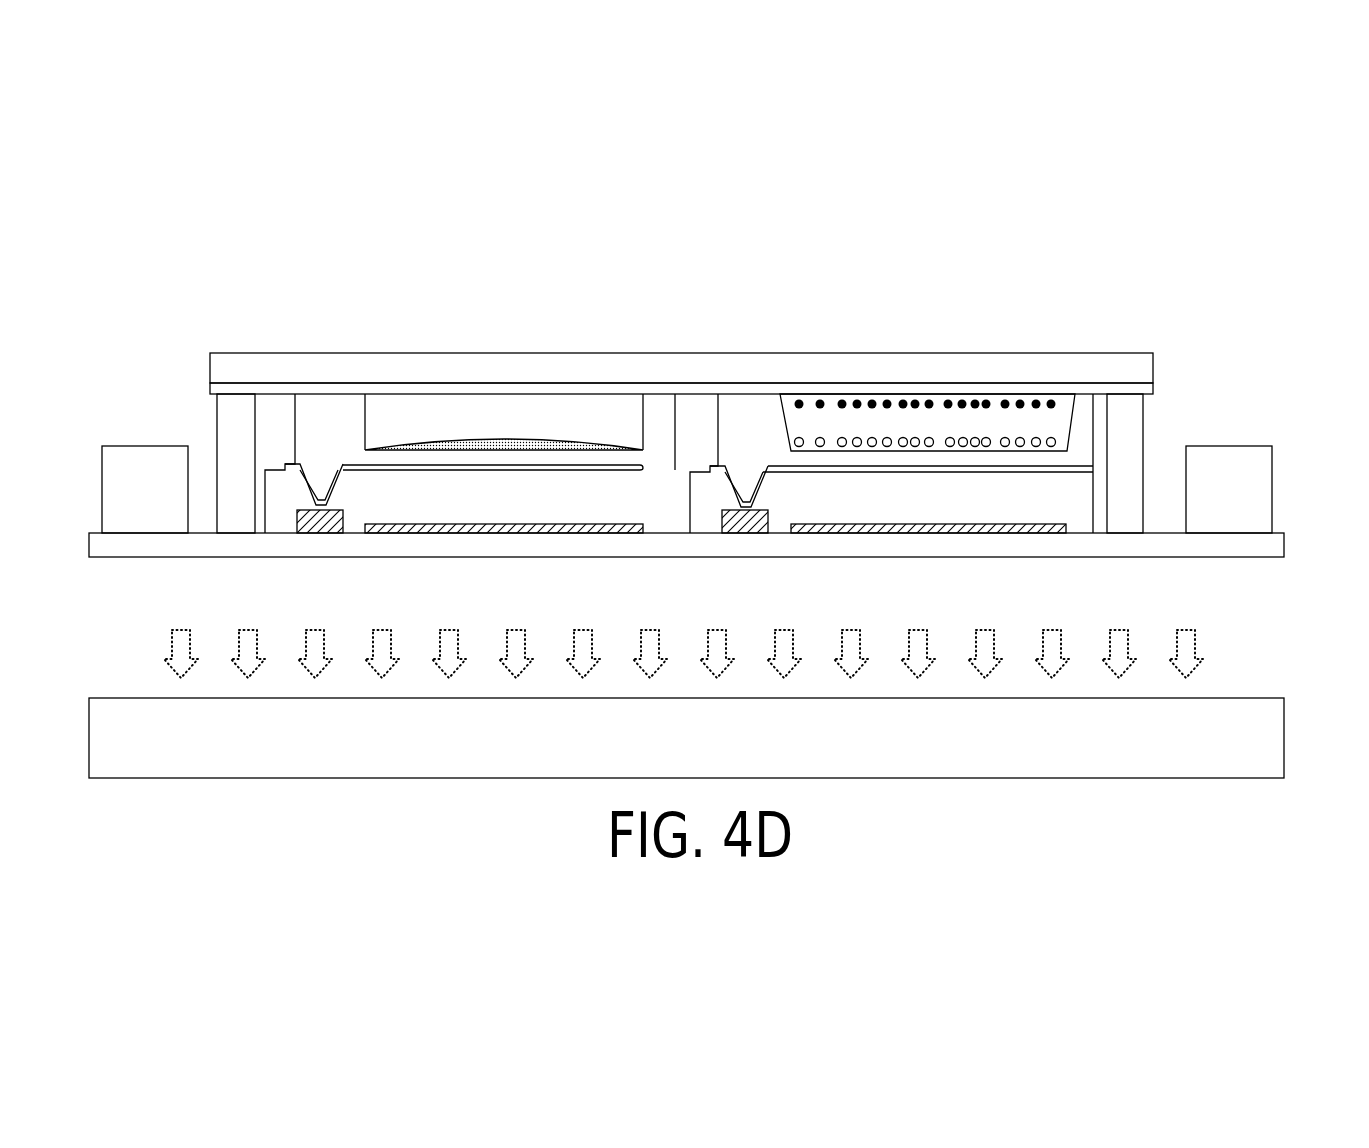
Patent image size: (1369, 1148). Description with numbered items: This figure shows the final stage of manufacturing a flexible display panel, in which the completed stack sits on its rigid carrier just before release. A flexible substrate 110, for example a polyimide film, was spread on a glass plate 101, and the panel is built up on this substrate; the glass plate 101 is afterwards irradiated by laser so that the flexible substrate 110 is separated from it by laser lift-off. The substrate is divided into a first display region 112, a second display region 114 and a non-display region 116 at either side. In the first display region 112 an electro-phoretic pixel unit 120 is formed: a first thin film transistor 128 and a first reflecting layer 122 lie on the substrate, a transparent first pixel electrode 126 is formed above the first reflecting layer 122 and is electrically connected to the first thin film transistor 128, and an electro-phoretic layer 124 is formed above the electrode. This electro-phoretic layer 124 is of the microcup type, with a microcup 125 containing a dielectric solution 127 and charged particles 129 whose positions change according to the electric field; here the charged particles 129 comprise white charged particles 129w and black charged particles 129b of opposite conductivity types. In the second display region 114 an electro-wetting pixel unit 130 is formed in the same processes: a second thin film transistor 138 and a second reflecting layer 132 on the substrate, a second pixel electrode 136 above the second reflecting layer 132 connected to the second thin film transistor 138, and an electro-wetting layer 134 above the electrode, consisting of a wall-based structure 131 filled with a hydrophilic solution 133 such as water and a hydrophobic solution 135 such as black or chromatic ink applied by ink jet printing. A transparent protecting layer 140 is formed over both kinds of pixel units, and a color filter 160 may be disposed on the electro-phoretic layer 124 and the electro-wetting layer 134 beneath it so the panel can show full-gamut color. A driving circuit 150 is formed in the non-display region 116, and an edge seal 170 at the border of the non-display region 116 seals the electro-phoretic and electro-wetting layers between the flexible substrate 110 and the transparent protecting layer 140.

The glass plate 101 is at (1284, 745).
The flexible substrate 110 is at (1282, 545).
The first display region 112 is at (702, 568).
The second display region 114 is at (690, 568).
The non-display region 116 is at (88, 568).
The electro-phoretic pixel unit 120 is at (653, 203).
The first reflecting layer 122 is at (998, 525).
The electro-phoretic layer 124 is at (953, 258).
The microcup 125 is at (752, 410).
The first pixel electrode 126 is at (1067, 467).
The dielectric solution 127 is at (835, 422).
The first thin film transistor 128 is at (723, 512).
The charged particles 129 is at (858, 309).
The white charged particles 129w is at (887, 438).
The black charged particles 129b is at (963, 403).
The electro-wetting pixel unit 130 is at (230, 203).
The wall-based structure 131 is at (667, 402).
The second reflecting layer 132 is at (408, 527).
The hydrophilic solution 133 is at (555, 405).
The electro-wetting layer 134 is at (638, 258).
The hydrophobic solution 135 is at (498, 440).
The second pixel electrode 136 is at (343, 466).
The second thin film transistor 138 is at (298, 510).
The transparent protecting layer 140 is at (1153, 362).
The driving circuit 150 is at (108, 490).
The color filter 160 is at (1153, 388).
The edge seal 170 is at (1138, 425).